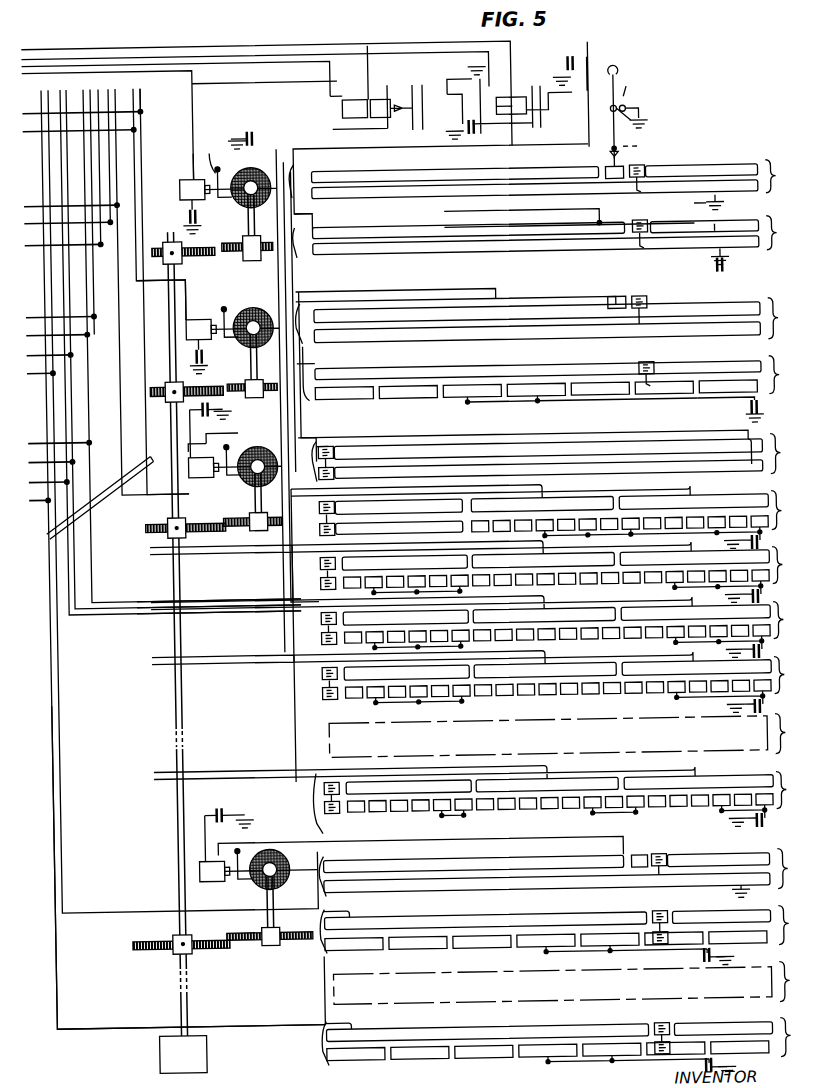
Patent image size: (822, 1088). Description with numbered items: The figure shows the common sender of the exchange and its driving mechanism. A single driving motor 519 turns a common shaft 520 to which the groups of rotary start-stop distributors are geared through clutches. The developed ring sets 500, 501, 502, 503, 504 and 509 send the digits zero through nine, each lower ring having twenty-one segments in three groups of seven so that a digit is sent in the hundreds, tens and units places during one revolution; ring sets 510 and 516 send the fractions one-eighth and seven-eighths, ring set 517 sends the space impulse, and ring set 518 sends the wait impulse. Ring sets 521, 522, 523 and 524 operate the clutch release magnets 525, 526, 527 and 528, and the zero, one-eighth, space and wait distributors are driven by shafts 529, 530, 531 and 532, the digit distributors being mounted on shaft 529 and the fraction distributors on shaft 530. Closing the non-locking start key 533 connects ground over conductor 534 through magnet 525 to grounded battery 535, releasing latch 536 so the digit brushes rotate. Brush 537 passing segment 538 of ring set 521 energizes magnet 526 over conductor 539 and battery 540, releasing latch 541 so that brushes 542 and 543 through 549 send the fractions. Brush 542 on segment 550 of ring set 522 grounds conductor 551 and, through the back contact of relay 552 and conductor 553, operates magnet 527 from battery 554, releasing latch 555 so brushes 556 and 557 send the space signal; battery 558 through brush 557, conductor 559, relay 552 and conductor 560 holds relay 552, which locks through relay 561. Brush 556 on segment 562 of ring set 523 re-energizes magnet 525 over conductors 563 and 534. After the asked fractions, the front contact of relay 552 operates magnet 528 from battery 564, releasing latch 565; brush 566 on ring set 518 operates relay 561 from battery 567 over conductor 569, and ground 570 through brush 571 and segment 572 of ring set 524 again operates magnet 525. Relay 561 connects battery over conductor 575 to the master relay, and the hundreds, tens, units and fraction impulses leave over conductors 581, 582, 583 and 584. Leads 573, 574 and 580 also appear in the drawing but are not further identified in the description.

The ring set 500 is at (770, 513).
The ring set 501 is at (770, 568).
The ring set 502 is at (770, 623).
The ring set 503 is at (770, 678).
The ring set 504 is at (770, 725).
The ring set 509 is at (770, 791).
The ring set 510 is at (795, 929).
The ring set 516 is at (795, 1041).
The ring set 517 is at (770, 376).
The ring set 518 is at (770, 232).
The driving motor 519 is at (198, 1058).
The common shaft 520 is at (180, 625).
The ring set 521 is at (770, 471).
The ring set 522 is at (766, 865).
The ring set 523 is at (770, 320).
The ring set 524 is at (770, 183).
The clutch release magnet 525 is at (202, 474).
The clutch release magnet 526 is at (204, 878).
The clutch release magnet 527 is at (208, 316).
The clutch release magnet 528 is at (182, 178).
The shaft 529 is at (256, 520).
The shaft 530 is at (267, 897).
The shaft 531 is at (250, 358).
The shaft 532 is at (253, 207).
The non-locking start key 533 is at (625, 76).
The conductor 534 is at (283, 417).
The grounded battery 535 is at (212, 426).
The latch 536 is at (230, 438).
The brush 537 is at (330, 443).
The segment 538 is at (770, 445).
The conductor 539 is at (323, 425).
The grounded battery 540 is at (224, 810).
The latch 541 is at (242, 843).
The brush 542 is at (658, 876).
The brush 543 is at (660, 926).
The brush 549 is at (653, 1038).
The segment 550 is at (640, 858).
The conductor 551 is at (396, 848).
The relay 552 is at (374, 99).
The conductor 553 is at (290, 266).
The grounded battery 554 is at (204, 354).
The latch 555 is at (230, 306).
The brush 556 is at (652, 311).
The brush 557 is at (654, 372).
The grounded battery 558 is at (747, 416).
The conductor 559 is at (297, 289).
The conductor 560 is at (110, 53).
The relay 561 is at (534, 118).
The segment 562 is at (622, 306).
The conductor 563 is at (520, 292).
The grounded battery 564 is at (192, 219).
The latch 565 is at (212, 150).
The brush 566 is at (650, 254).
The grounded battery 567 is at (738, 277).
The conductor 569 is at (330, 213).
The ground 570 is at (723, 208).
The brush 571 is at (646, 195).
The segment 572 is at (613, 185).
The conductor 573 is at (148, 68).
The cable of conductors 574 is at (77, 325).
The conductor 575 is at (56, 43).
The conductor 580 is at (160, 60).
The conductor 581 is at (184, 657).
The conductor 582 is at (160, 266).
The conductor 583 is at (138, 143).
The conductor 584 is at (49, 804).